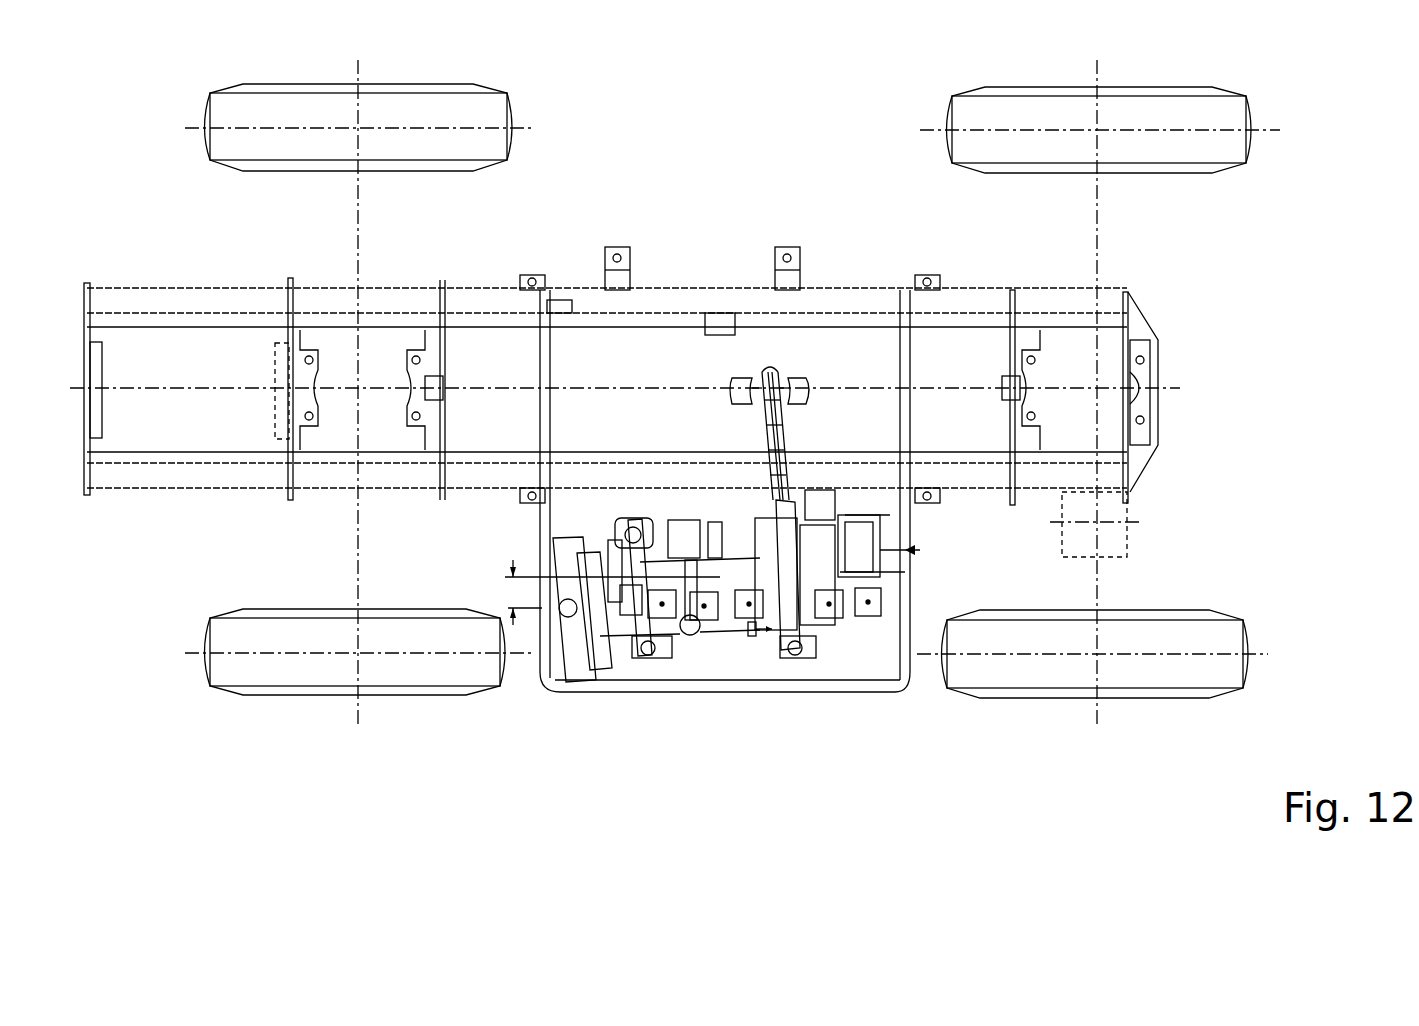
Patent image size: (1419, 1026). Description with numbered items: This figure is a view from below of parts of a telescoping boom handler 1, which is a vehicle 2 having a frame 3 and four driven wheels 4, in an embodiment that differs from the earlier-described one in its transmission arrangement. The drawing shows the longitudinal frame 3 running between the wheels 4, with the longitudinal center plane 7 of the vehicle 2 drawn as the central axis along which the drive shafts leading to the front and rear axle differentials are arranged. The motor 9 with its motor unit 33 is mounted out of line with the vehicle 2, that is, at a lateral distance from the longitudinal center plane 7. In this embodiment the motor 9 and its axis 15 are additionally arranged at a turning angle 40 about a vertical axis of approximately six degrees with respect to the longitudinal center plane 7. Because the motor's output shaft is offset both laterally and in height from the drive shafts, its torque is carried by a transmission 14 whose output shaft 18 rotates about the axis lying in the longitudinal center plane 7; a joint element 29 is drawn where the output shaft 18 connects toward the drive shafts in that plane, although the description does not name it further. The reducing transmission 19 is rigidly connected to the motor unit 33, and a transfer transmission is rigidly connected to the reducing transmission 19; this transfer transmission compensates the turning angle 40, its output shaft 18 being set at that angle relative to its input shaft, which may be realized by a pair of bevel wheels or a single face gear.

The telescoping boom handler 1 is at (1200, 542).
The vehicle 2 is at (700, 376).
The frame 3 is at (388, 300).
The driven wheels 4 is at (444, 105).
The longitudinal center plane 7 is at (138, 388).
The motor 9 is at (697, 654).
The transmission 14 is at (908, 550).
The axis 15 is at (530, 605).
The output shaft 18 is at (752, 375).
The reducing transmission 19 is at (845, 615).
The universal joint 29 is at (775, 368).
The motor unit 33 is at (724, 625).
The turning angle 40 is at (518, 592).